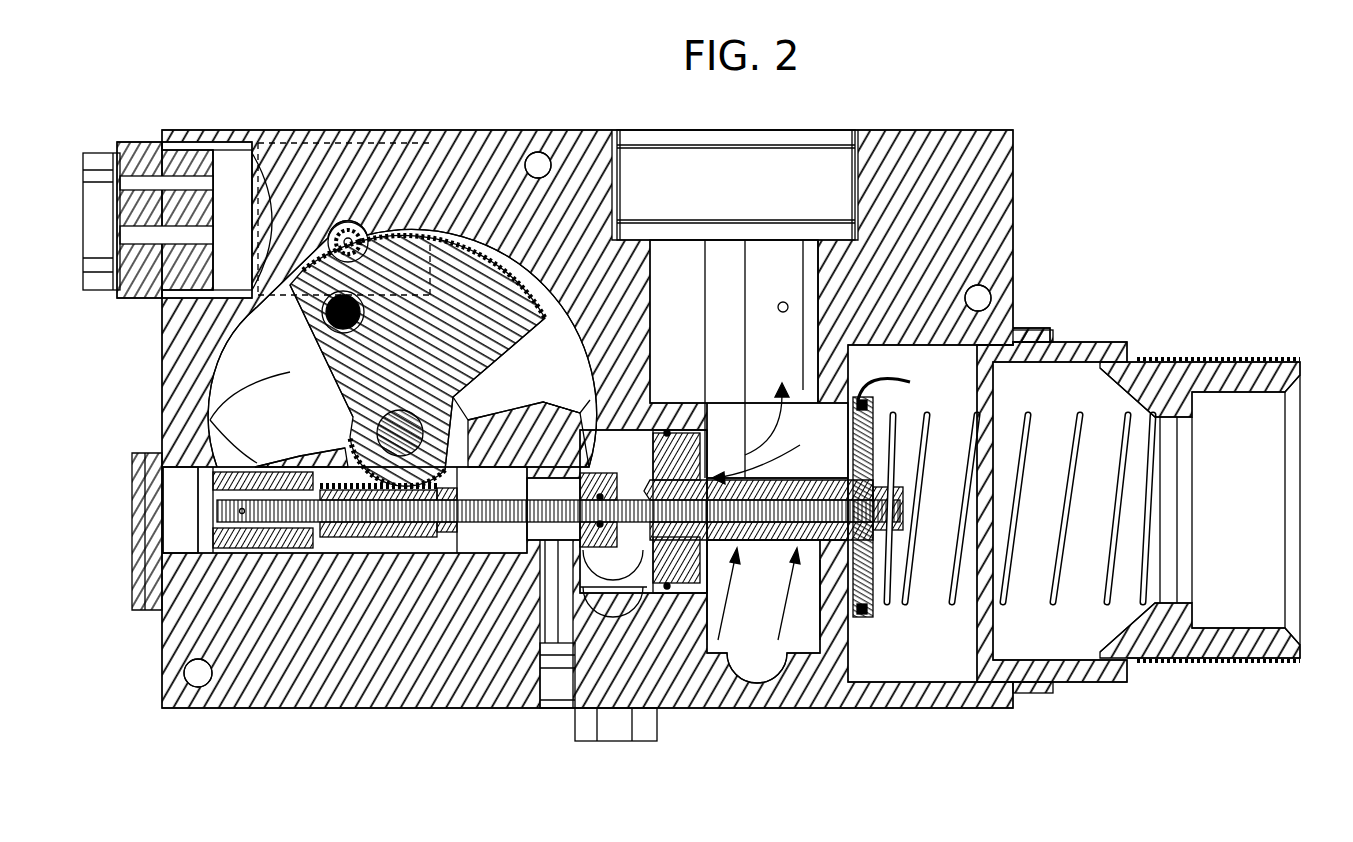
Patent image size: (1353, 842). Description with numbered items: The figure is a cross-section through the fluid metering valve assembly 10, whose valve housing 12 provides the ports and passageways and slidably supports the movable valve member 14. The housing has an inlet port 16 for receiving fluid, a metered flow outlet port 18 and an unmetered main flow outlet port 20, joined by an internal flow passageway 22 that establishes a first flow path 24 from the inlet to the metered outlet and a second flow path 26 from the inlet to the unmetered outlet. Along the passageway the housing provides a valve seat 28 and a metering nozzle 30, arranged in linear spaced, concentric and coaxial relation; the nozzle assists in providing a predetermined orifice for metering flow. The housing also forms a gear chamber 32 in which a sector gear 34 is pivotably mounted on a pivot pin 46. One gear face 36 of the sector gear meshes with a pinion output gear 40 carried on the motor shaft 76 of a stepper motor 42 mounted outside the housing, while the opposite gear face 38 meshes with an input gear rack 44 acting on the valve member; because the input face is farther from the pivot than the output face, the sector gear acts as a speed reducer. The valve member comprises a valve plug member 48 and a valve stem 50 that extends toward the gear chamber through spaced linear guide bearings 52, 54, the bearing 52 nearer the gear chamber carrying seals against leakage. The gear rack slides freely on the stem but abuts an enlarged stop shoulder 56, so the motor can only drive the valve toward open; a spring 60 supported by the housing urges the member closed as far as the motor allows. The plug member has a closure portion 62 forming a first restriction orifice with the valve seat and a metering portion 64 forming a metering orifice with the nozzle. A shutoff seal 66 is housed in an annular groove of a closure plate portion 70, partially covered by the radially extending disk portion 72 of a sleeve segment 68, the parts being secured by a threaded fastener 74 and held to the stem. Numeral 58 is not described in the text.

The fluid metering valve assembly 10 is at (1188, 122).
The valve housing 12 is at (964, 128).
The movable valve member 14 is at (720, 600).
The inlet port 16 is at (1275, 500).
The metered flow outlet port 18 is at (612, 555).
The unmetered flow outlet port 20 is at (850, 182).
The internal flow passageway 22 is at (985, 670).
The first flow path 24 is at (735, 400).
The second flow path 26 is at (760, 400).
The valve seat 28 is at (868, 620).
The metering nozzle 30 is at (699, 560).
The gear chamber 32 is at (258, 387).
The sector gear 34 is at (340, 360).
The gear face 36 is at (392, 232).
The gear face 38 is at (340, 440).
The pinion output gear 40 is at (368, 225).
The stepper motor 42 is at (456, 165).
The input gear rack 44 is at (372, 522).
The pivot pin 46 is at (492, 330).
The valve plug member 48 is at (760, 542).
The valve stem 50 is at (492, 520).
The linear guide bearing 52 is at (636, 550).
The linear guide bearing 54 is at (252, 556).
The stop shoulder 56 is at (453, 500).
The bushing 58 is at (310, 508).
The spring 60 is at (1055, 605).
The closure portion 62 is at (883, 637).
The metering portion 64 is at (668, 430).
The shutoff seal 66 is at (875, 335).
The sleeve segment 68 is at (800, 542).
The closure plate portion 70 is at (960, 405).
The radially extending disk portion 72 is at (835, 600).
The threaded fastener 74 is at (962, 640).
The motor shaft 76 is at (343, 238).